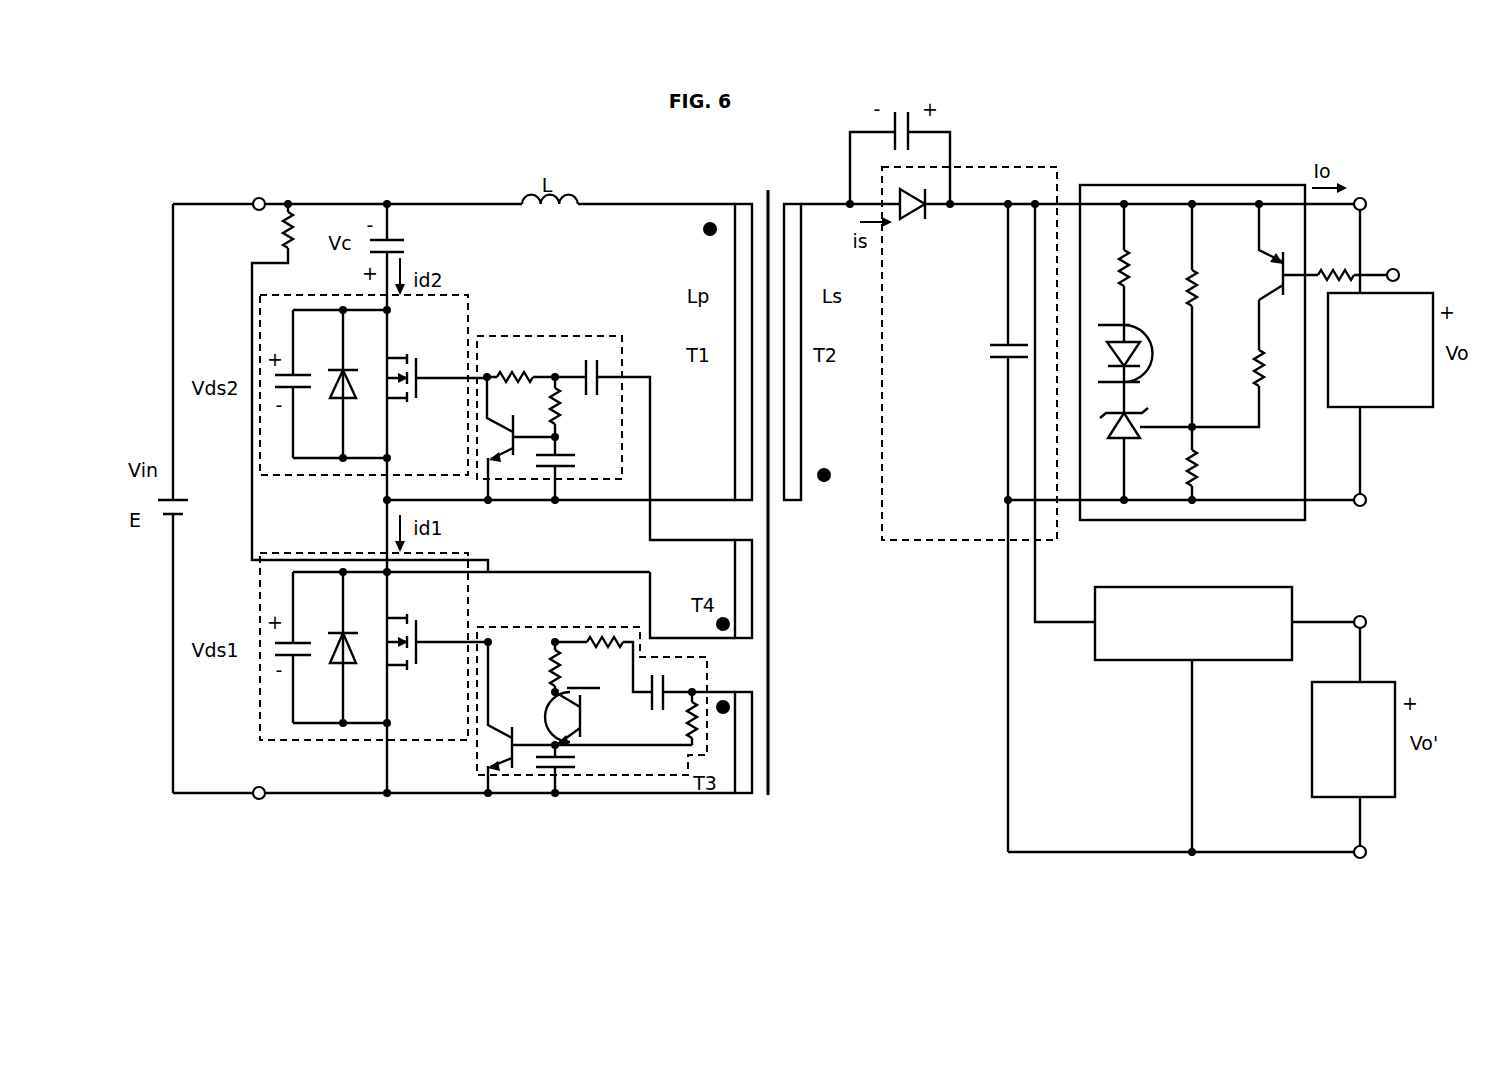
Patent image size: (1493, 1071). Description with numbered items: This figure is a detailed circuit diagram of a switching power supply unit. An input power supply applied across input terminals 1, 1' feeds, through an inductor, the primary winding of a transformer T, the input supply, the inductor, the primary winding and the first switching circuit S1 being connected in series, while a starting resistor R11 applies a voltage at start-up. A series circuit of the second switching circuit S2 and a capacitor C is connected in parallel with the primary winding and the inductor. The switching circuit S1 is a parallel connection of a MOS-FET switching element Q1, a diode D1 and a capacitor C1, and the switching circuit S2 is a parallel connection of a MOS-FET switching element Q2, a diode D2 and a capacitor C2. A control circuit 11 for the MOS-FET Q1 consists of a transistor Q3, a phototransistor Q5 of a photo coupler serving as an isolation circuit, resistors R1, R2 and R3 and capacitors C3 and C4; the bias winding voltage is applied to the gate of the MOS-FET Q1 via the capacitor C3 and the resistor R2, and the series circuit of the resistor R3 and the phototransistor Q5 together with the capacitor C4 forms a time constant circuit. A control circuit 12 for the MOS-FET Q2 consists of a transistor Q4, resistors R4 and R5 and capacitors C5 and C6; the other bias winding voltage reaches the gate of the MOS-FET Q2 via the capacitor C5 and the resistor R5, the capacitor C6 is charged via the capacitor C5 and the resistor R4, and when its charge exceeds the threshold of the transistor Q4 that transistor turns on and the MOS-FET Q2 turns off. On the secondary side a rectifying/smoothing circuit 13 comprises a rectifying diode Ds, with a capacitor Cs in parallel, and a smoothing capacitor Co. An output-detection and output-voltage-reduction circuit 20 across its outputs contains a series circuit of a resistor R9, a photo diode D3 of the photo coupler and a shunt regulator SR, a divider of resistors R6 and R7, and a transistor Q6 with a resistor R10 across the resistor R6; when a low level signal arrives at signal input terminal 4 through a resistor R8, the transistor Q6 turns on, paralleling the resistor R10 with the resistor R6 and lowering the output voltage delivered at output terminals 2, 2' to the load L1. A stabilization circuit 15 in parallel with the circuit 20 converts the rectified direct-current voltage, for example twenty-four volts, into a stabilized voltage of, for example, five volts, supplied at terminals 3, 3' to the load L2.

The input terminal 1 is at (259, 192).
The input terminal 1' is at (258, 808).
The output terminal 2 is at (1361, 191).
The output terminal 2' is at (1363, 514).
The output terminal 3 is at (1360, 608).
The output terminal 3' is at (1363, 867).
The signal input terminal 4 is at (1393, 263).
The control circuit 11 is at (593, 627).
The control circuit 12 is at (593, 336).
The rectifying/smoothing circuit 13 is at (1010, 165).
The stabilization circuit 15 is at (1232, 587).
The output-detection and output-voltage-reduction circuit 20 is at (1133, 185).
The transformer T is at (740, 484).
The load L1 is at (1420, 410).
The load L2 is at (1388, 682).
The first switching circuit S1 is at (462, 560).
The second switching circuit S2 is at (463, 296).
The first switching element Q1 is at (437, 682).
The second switching element Q2 is at (437, 405).
The transistor Q3 is at (507, 717).
The transistor Q4 is at (521, 438).
The phototransistor Q5 is at (582, 718).
The transistor Q6 is at (1273, 252).
The capacitor C is at (398, 255).
The first capacitor C1 is at (300, 647).
The second capacitor C2 is at (300, 384).
The capacitor C3 is at (676, 697).
The capacitor C4 is at (574, 769).
The capacitor C5 is at (643, 450).
The capacitor C6 is at (576, 466).
The capacitor Cs is at (900, 160).
The smoothing capacitor Co is at (987, 526).
The first diode D1 is at (356, 647).
The second diode D2 is at (356, 384).
The photo diode D3 is at (1137, 359).
The rectifying diode Ds is at (917, 220).
The shunt regulator SR is at (1146, 454).
The resistor R1 is at (676, 718).
The resistor R2 is at (603, 664).
The resistor R3 is at (536, 669).
The resistor R4 is at (535, 407).
The resistor R5 is at (519, 363).
The resistor R6 is at (1211, 315).
The resistor R7 is at (1212, 463).
The resistor R8 is at (1352, 262).
The resistor R9 is at (1145, 264).
The resistor R10 is at (1228, 363).
The starting resistor R11 is at (362, 386).